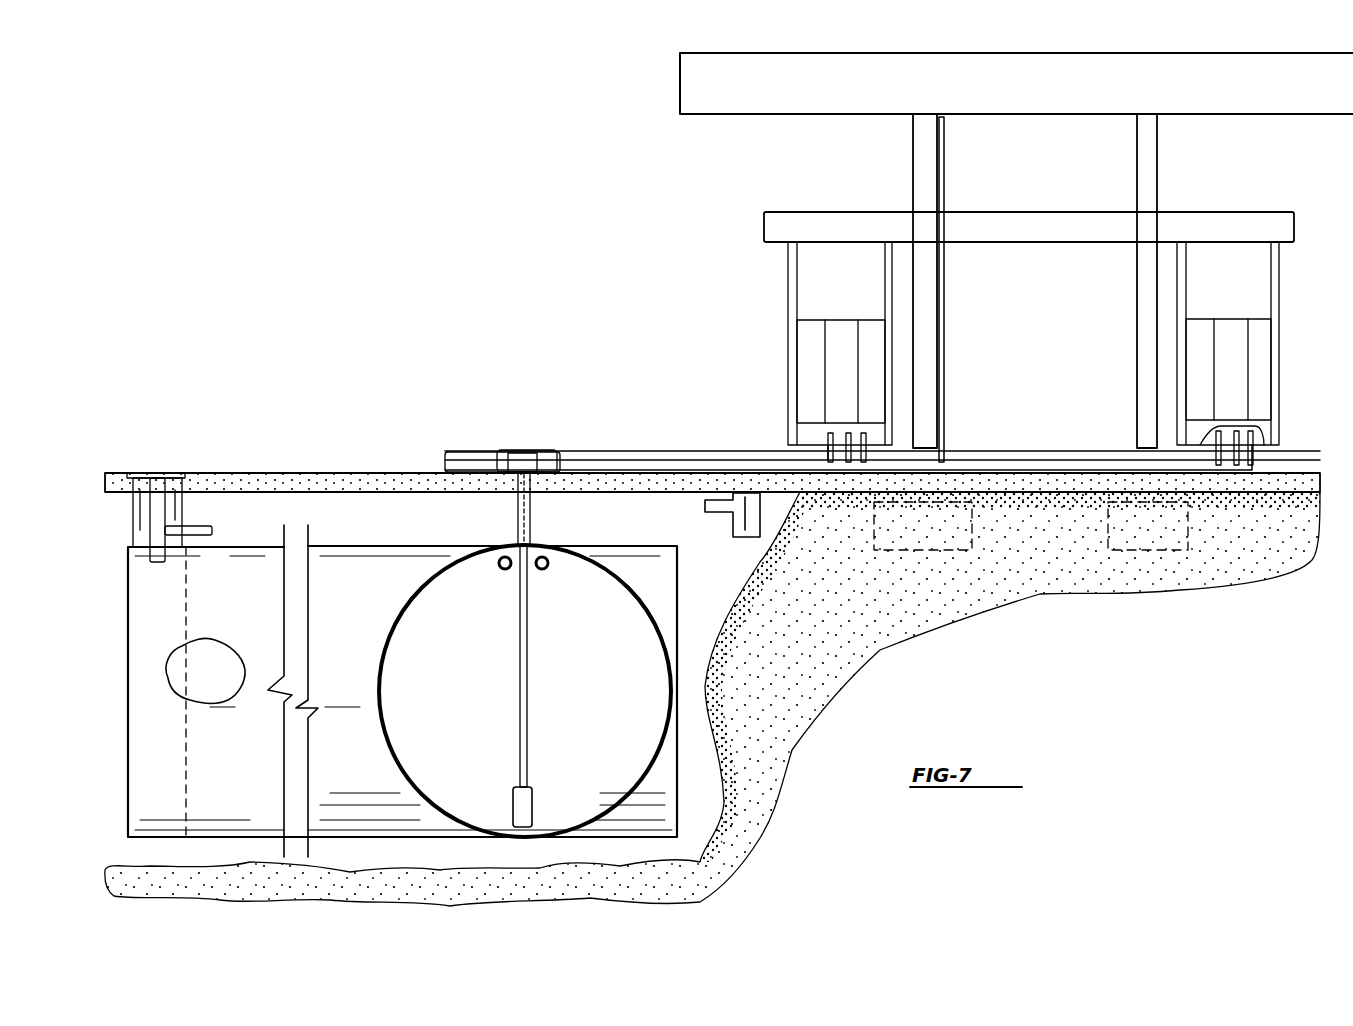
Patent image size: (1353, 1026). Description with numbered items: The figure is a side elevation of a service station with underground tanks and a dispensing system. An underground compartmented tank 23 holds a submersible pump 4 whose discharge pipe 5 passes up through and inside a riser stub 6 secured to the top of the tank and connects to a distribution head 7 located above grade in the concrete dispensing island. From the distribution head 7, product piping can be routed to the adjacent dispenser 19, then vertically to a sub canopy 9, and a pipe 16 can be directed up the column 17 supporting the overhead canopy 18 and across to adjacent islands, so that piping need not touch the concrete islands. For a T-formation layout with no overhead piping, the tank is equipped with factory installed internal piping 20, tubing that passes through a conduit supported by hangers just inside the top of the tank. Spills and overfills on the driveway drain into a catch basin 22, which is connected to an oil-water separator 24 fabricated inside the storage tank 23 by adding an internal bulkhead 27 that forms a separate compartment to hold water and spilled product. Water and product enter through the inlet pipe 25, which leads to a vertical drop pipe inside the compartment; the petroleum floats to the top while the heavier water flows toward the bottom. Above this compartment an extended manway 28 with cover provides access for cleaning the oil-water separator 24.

The submersible pump 4 is at (533, 802).
The discharge pipe 5 is at (527, 645).
The riser stub 6 is at (530, 508).
The distribution head 7 is at (524, 452).
The sub canopy 9 is at (795, 238).
The pipe 16 is at (944, 340).
The column 17 is at (913, 157).
The canopy 18 is at (726, 106).
The dispenser 19 is at (849, 294).
The internal piping 20 is at (503, 569).
The catch basin 22 is at (733, 507).
The compartmented tank 23 is at (365, 814).
The oil-water separator 24 is at (164, 618).
The inlet pipe 25 is at (212, 531).
The internal bulkhead 27 is at (190, 690).
The extended manway 28 is at (185, 489).